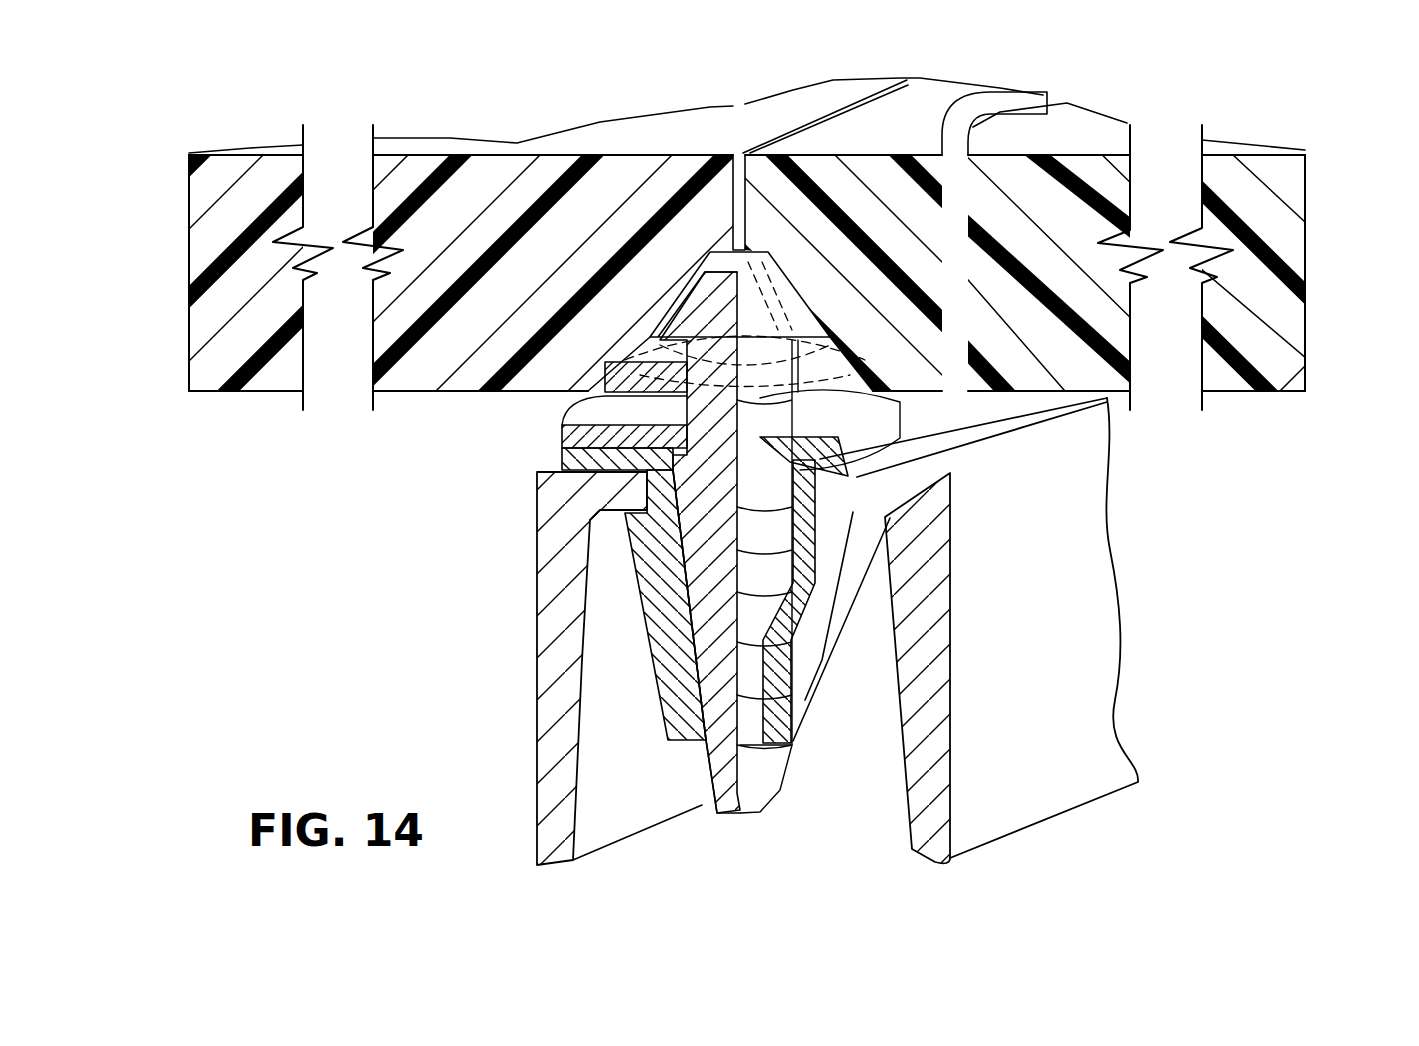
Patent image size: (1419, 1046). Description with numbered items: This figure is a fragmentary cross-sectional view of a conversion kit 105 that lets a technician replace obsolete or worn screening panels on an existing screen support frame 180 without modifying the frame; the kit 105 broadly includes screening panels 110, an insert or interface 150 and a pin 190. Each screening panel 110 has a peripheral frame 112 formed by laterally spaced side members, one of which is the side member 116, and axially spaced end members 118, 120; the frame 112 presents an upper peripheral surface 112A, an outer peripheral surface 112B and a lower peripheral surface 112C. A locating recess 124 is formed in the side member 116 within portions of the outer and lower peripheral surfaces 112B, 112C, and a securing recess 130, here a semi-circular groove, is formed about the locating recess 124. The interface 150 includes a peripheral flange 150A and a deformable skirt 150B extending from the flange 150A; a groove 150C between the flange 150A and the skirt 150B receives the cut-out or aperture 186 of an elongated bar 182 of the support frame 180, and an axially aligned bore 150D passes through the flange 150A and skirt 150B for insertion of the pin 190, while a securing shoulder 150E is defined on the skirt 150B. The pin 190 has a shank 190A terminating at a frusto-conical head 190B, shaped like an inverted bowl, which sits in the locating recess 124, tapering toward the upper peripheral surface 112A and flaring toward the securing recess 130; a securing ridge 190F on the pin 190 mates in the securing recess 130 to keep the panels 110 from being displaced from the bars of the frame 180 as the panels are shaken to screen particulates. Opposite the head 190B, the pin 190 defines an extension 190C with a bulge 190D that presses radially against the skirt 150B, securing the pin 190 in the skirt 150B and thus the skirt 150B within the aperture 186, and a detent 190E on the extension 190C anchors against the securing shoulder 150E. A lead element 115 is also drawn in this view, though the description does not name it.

The conversion kit 105 is at (410, 70).
The screening panel 110 is at (697, 120).
The peripheral frame 112 is at (158, 215).
The upper peripheral surface 112A is at (615, 138).
The outer peripheral surface 112B is at (736, 153).
The lower peripheral surface 112C is at (1280, 395).
The conductive lead 115 is at (1047, 92).
The side member 116 is at (418, 372).
The end member 118 is at (188, 175).
The end member 120 is at (1305, 203).
The locating recess 124 is at (797, 340).
The securing recess 130 is at (908, 418).
The interface 150 is at (774, 595).
The peripheral flange 150A is at (888, 497).
The deformable skirt 150B is at (834, 625).
The groove 150C is at (892, 548).
The bore 150D is at (536, 487).
The securing shoulder 150E is at (688, 742).
The screen support frame 180 is at (729, 635).
The elongated bar 182 is at (950, 850).
The aperture 186 is at (625, 492).
The pin 190 is at (692, 562).
The shank 190A is at (653, 350).
The head 190B is at (797, 300).
The extension 190C is at (740, 818).
The bulge 190D is at (663, 550).
The detent 190E is at (752, 752).
The securing ridge 190F is at (575, 405).